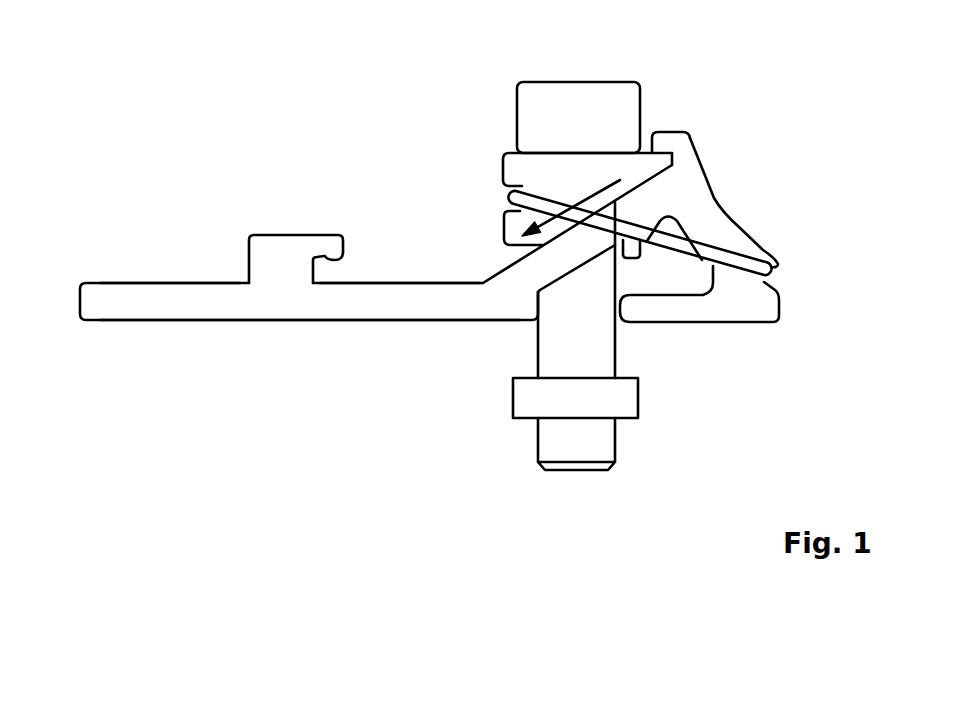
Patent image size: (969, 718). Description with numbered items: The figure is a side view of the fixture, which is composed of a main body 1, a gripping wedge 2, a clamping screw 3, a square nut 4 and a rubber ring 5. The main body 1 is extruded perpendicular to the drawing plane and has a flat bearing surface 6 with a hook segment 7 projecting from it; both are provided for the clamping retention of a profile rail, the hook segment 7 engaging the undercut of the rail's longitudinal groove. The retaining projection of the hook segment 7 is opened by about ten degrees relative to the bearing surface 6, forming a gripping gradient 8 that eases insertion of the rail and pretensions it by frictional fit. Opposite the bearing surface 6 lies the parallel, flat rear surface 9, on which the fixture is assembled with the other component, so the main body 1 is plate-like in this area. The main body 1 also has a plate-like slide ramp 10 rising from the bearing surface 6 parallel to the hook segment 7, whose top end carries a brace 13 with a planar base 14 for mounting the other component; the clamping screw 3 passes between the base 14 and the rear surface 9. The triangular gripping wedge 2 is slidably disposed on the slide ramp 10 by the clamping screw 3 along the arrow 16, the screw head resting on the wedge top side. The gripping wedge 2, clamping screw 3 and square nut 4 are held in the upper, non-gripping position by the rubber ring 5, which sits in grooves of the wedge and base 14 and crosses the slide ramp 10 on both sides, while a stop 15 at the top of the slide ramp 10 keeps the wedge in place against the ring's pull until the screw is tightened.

The main body 1 is at (80, 300).
The gripping wedge 2 is at (506, 156).
The clamping screw 3 is at (598, 82).
The square nut 4 is at (513, 399).
The rubber ring 5 is at (505, 197).
The bearing surface 6 is at (150, 282).
The hook segment 7 is at (290, 234).
The gripping gradient 8 is at (326, 262).
The rear surface 9 is at (290, 322).
The slide ramp 10 is at (500, 272).
The brace 13 is at (738, 222).
The base 14 is at (700, 323).
The stop 15 is at (682, 128).
The arrow 16 is at (586, 196).